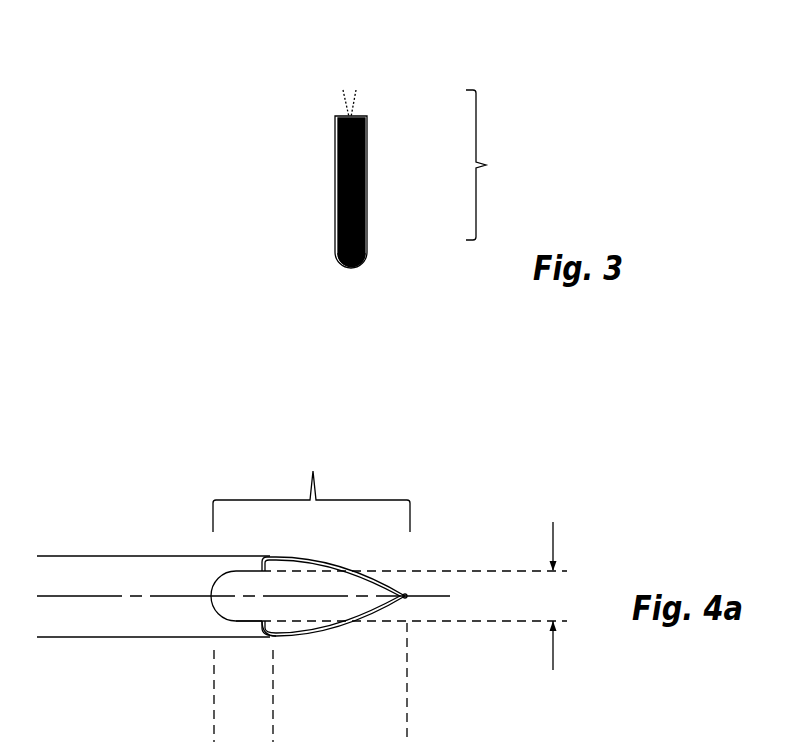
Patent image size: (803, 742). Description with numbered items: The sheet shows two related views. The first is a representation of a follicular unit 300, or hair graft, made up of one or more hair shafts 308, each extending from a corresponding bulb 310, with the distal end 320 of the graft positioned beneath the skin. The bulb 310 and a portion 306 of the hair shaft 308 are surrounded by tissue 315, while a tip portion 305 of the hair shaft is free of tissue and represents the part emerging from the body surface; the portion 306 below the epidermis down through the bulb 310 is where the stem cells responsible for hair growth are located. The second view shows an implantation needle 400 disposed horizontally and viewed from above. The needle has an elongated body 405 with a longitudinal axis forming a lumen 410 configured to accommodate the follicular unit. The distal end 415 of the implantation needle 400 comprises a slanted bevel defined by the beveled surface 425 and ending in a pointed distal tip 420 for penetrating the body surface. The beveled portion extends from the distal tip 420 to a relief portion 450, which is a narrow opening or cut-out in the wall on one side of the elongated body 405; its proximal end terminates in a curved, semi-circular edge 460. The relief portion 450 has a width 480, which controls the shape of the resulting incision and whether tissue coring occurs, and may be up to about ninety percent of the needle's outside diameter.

In FIG. 3, the follicular unit 300 is at (391, 41).
In FIG. 3, the tip portion 305 is at (347, 110).
In FIG. 3, the portion of the hair shaft 306 is at (353, 188).
In FIG. 3, the hair shaft 308 is at (505, 165).
In FIG. 3, the bulb 310 is at (345, 205).
In FIG. 3, the tissue 315 is at (338, 157).
In FIG. 3, the distal end 320 is at (358, 267).
In FIG. 4A, the implantation needle 400 is at (446, 539).
In FIG. 4A, the elongated body 405 is at (152, 556).
In FIG. 4A, the lumen 410 is at (323, 611).
In FIG. 4A, the distal end 415 is at (311, 592).
In FIG. 4A, the distal tip 420 is at (405, 597).
In FIG. 4A, the beveled surface 425 is at (277, 635).
In FIG. 4A, the relief portion 450 is at (241, 627).
In FIG. 4A, the curved edge 460 is at (210, 597).
In FIG. 4A, the width 480 is at (418, 632).